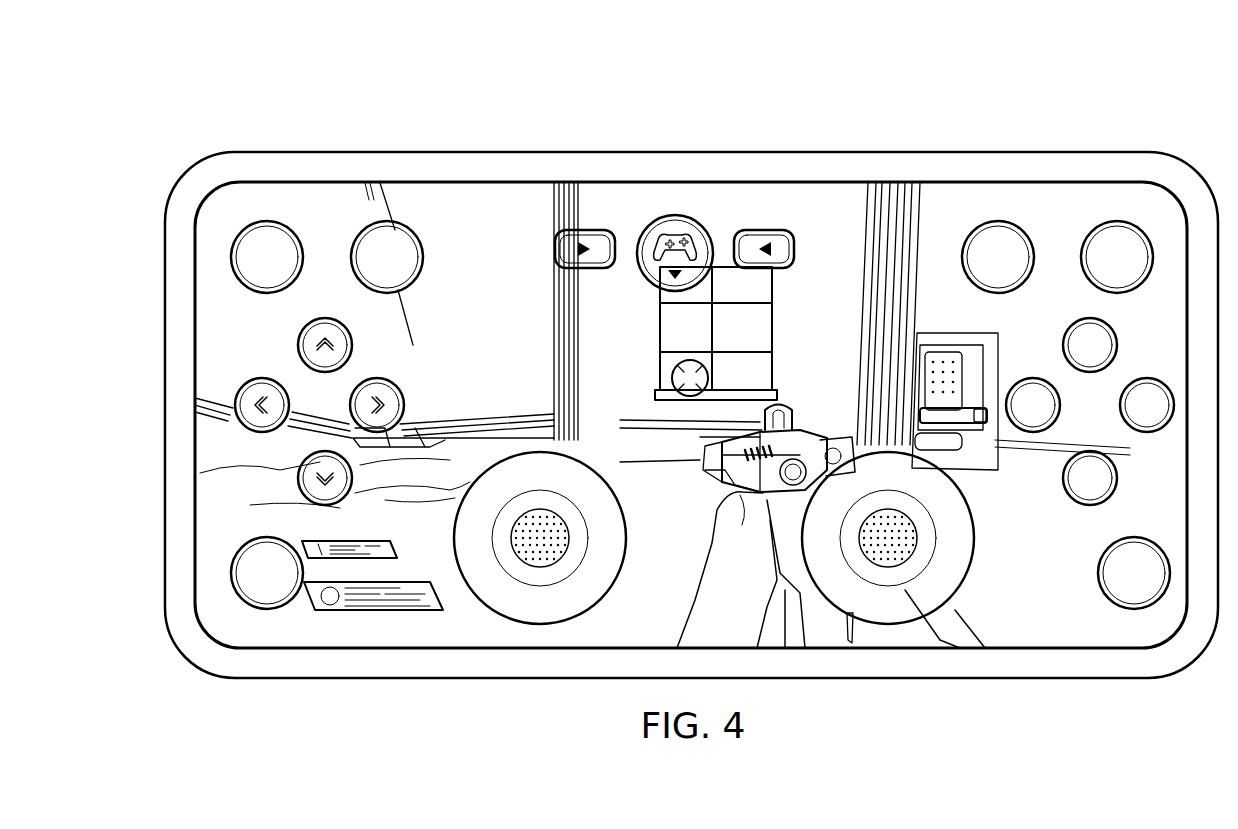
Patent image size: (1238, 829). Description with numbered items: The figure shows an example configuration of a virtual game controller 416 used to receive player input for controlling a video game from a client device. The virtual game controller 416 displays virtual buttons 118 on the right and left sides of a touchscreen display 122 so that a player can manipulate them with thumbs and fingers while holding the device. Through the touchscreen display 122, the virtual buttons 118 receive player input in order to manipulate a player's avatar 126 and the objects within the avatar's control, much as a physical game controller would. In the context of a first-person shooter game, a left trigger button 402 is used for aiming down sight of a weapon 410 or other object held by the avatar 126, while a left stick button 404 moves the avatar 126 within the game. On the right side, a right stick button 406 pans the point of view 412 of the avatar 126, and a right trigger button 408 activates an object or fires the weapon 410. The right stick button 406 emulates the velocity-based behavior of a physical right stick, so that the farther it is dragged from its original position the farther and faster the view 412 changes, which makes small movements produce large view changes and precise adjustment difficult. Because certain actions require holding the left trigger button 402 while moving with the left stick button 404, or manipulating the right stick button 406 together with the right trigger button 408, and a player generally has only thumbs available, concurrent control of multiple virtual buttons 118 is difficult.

The virtual game controller 416 is at (287, 84).
The touchscreen display 122 is at (507, 198).
The point of view 412 is at (764, 208).
The left trigger button 402 is at (231, 256).
The right trigger button 408 is at (1116, 221).
The virtual buttons 118 is at (262, 378).
The left stick button 404 is at (541, 568).
The right stick button 406 is at (888, 568).
The weapon 410 is at (735, 502).
The avatar 126 is at (688, 608).